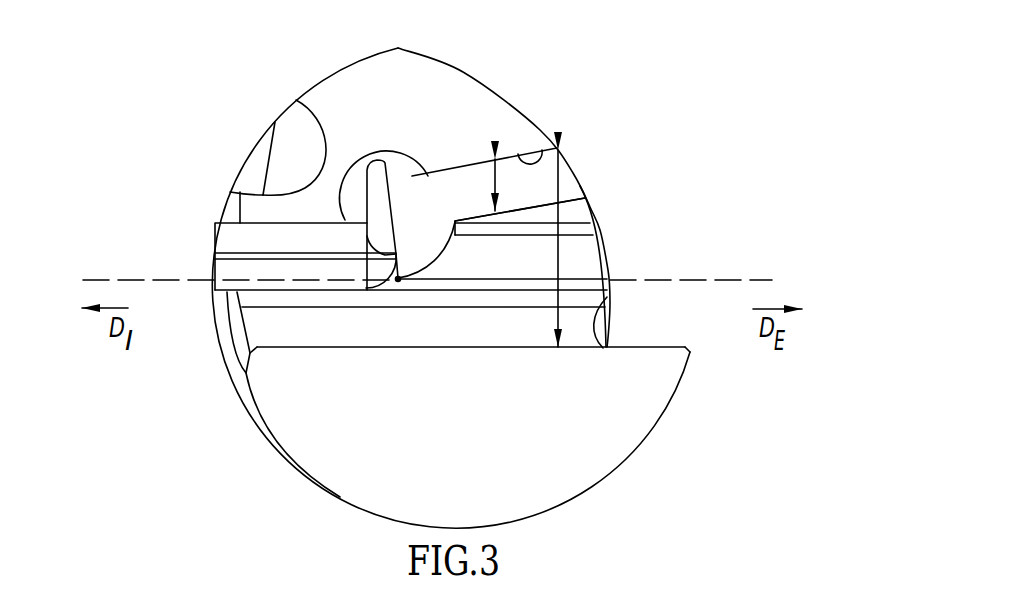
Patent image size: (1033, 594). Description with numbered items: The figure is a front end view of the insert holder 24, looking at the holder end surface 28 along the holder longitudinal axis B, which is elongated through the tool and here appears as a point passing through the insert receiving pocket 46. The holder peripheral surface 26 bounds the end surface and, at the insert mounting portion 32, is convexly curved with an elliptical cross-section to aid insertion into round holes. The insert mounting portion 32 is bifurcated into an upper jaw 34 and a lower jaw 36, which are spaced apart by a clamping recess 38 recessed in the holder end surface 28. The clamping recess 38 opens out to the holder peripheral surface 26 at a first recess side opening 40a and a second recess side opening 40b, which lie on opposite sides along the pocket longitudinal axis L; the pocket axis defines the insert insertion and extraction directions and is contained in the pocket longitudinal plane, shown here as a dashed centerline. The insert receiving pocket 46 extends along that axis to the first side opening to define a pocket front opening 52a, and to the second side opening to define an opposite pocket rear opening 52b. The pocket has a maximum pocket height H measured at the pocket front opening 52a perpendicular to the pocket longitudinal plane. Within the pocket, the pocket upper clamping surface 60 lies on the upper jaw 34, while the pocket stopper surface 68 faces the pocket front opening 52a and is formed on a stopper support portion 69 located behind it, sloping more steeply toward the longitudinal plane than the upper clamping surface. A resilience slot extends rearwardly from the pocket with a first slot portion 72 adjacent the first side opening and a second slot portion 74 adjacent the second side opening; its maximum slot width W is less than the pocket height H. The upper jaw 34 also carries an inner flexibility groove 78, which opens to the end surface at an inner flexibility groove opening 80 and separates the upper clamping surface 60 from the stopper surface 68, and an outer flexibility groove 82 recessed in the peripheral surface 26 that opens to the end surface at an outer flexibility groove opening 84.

The insert holder 24 is at (650, 72).
The holder peripheral surface 26 is at (307, 90).
The holder end surface 28 is at (628, 398).
The insert mounting portion 32 is at (202, 168).
The upper jaw 34 is at (448, 98).
The lower jaw 36 is at (595, 442).
The clamping recess 38 is at (578, 257).
The first recess side opening 40a is at (602, 202).
The second recess side opening 40b is at (204, 240).
The insert receiving pocket 46 is at (330, 316).
The pocket front opening 52a is at (625, 207).
The pocket rear opening 52b is at (203, 268).
The pocket upper clamping surface 60 is at (537, 150).
The pocket stopper surface 68 is at (348, 221).
The stopper support portion 69 is at (296, 208).
The first slot portion 72 is at (467, 210).
The second slot portion 74 is at (293, 266).
The inner flexibility groove 78 is at (418, 168).
The inner flexibility groove opening 80 is at (375, 195).
The outer flexibility groove 82 is at (254, 124).
The outer flexibility groove opening 84 is at (302, 147).
The maximum slot width W is at (493, 166).
The maximum pocket height H is at (558, 188).
The holder longitudinal axis B is at (399, 284).
The pocket longitudinal axis L is at (760, 280).